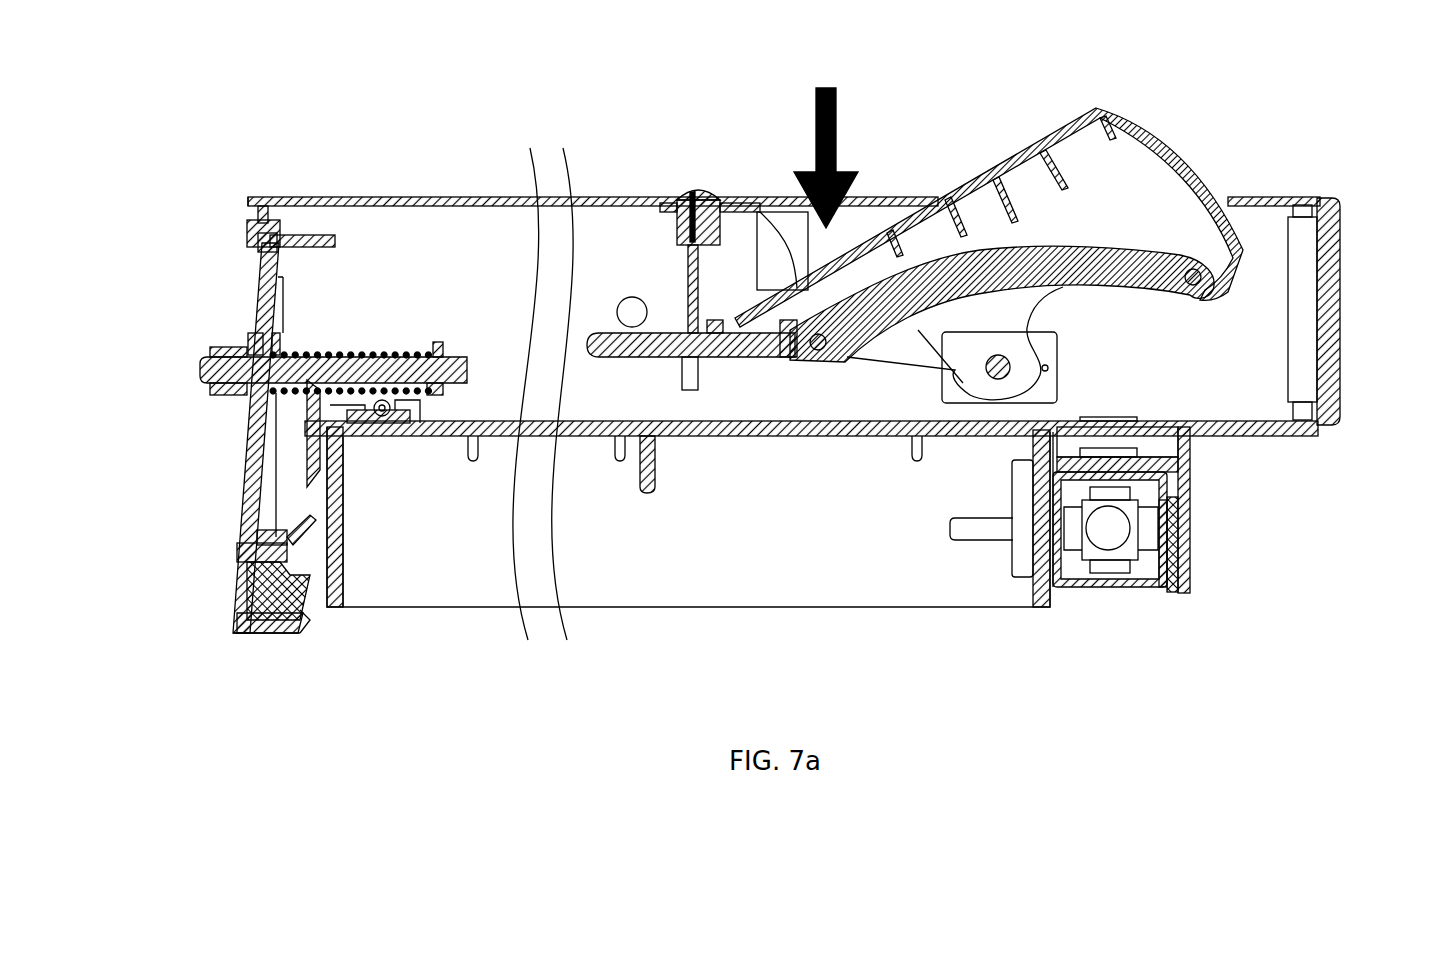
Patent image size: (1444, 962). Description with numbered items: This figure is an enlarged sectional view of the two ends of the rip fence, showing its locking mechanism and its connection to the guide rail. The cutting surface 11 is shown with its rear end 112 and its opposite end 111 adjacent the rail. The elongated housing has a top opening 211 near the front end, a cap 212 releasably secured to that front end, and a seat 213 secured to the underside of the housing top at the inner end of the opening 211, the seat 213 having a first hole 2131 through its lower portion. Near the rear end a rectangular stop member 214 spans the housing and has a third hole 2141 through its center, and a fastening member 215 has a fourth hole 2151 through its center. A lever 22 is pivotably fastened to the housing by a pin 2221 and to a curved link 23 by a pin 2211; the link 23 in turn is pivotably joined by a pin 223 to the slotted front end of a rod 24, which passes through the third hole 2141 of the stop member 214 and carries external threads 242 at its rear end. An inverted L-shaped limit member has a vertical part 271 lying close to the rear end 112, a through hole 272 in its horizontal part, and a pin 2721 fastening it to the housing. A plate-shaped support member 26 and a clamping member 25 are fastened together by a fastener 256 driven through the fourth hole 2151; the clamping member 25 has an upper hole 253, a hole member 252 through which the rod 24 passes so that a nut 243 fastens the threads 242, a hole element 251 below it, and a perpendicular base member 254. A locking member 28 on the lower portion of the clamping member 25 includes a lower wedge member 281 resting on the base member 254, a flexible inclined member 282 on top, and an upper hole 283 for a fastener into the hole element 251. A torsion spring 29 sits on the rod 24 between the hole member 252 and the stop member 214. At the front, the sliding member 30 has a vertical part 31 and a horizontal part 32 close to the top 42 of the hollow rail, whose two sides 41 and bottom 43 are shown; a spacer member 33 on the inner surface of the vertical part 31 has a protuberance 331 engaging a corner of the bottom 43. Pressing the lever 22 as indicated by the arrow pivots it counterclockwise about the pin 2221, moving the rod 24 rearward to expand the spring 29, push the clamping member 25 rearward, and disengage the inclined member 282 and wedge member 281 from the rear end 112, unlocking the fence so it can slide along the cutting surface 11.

The cutting surface 11 is at (880, 437).
The housing side wall 111 is at (1040, 582).
The rear end 112 is at (338, 572).
The top opening 211 is at (920, 200).
The cap 212 is at (1338, 320).
The seat 213 is at (712, 195).
The first hole 2131 is at (690, 245).
The stop member 214 is at (436, 342).
The third hole 2141 is at (435, 395).
The fastening member 215 is at (262, 206).
The fourth hole 2151 is at (248, 207).
The lever 22 is at (1025, 150).
The pin 2211 is at (1197, 270).
The curved link 23 is at (1115, 250).
The pivot shaft 223 is at (815, 352).
The pin 2221 is at (985, 375).
The rod 24 is at (470, 355).
The external threads 242 is at (370, 375).
The nut 243 is at (222, 388).
The clamping member 25 is at (255, 437).
The hole element 251 is at (240, 555).
The hole member 252 is at (250, 342).
The upper hole 253 is at (262, 247).
The base member 254 is at (258, 632).
The fastener 256 is at (247, 232).
The support member 26 is at (313, 235).
The vertical part 271 is at (278, 455).
The through hole 272 is at (395, 417).
The pin 2721 is at (382, 417).
The locking member 28 is at (290, 645).
The wedge member 281 is at (300, 608).
The inclined member 282 is at (280, 520).
The upper hole 283 is at (237, 595).
The torsion spring 29 is at (320, 350).
The sliding member 30 is at (1190, 435).
The vertical part 31 is at (1170, 515).
The horizontal part 32 is at (1120, 465).
The spacer member 33 is at (1170, 545).
The protuberance 331 is at (1158, 590).
The sides 41 is at (1160, 548).
The top 42 is at (1088, 455).
The bottom 43 is at (1102, 585).